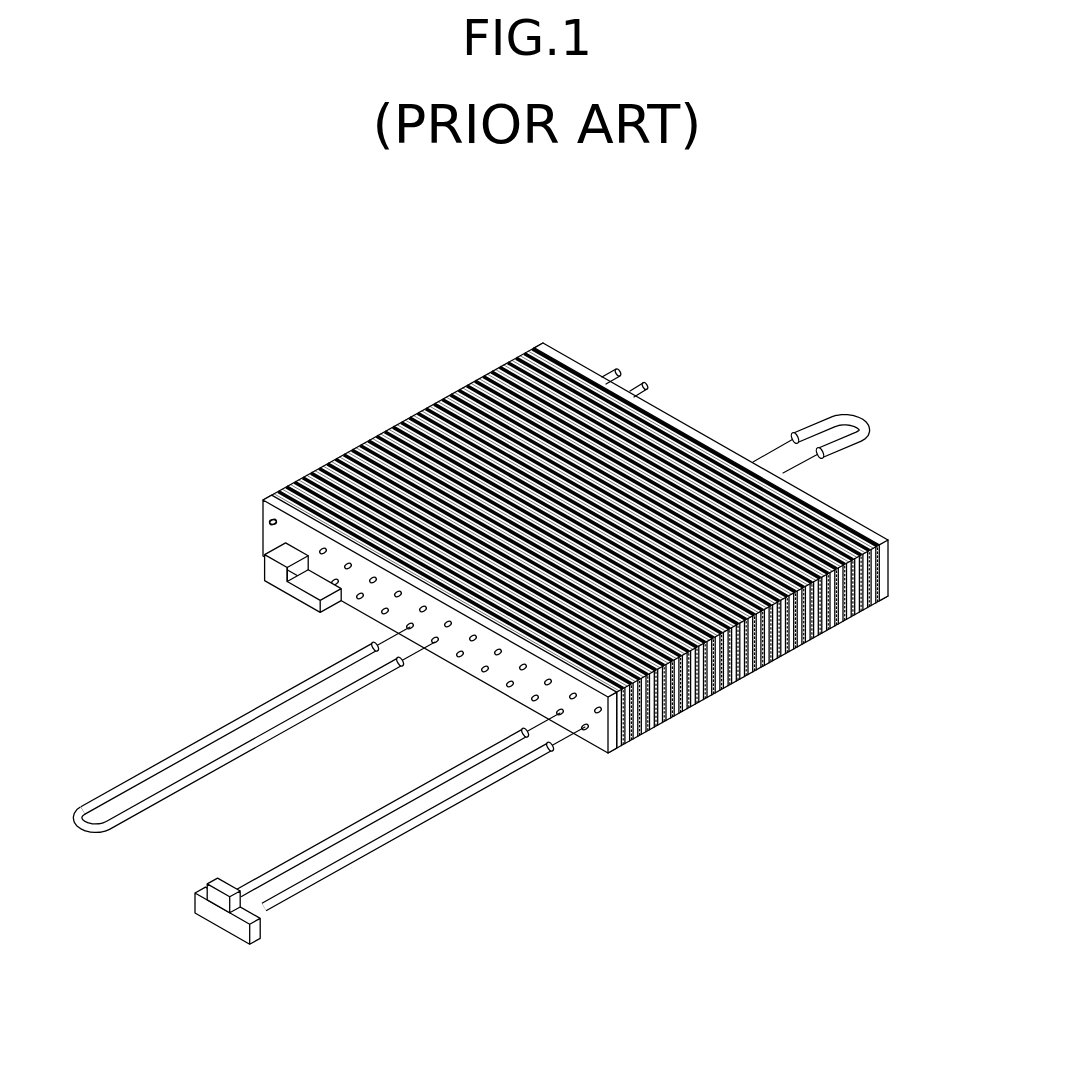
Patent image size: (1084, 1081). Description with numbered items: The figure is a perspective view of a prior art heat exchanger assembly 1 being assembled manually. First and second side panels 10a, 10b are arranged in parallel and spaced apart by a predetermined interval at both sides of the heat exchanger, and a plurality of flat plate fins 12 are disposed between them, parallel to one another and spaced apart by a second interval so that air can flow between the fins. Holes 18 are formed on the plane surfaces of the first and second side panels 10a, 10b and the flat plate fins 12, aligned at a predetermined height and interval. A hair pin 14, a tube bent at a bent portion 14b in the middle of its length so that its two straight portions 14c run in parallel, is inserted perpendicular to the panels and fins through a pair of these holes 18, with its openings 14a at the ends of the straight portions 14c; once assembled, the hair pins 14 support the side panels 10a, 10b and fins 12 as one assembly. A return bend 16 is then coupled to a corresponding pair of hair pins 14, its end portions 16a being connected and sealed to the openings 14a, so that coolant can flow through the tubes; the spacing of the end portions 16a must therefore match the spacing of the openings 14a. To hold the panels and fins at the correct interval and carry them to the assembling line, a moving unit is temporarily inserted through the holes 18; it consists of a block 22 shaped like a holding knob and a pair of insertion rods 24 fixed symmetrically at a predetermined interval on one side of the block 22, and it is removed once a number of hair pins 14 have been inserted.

The heat sink assembly 1 is at (394, 390).
The first side panel 10a is at (353, 580).
The second side panel 10b is at (872, 525).
The flat plate fins 12 is at (768, 663).
The hair pin 14 is at (158, 767).
The opening 14a is at (333, 643).
The bent portion 14b is at (112, 826).
The straight portion 14c is at (217, 732).
The return bend 16 is at (855, 416).
The end portion of return bend 16a is at (797, 433).
The holes 18 is at (507, 686).
The block 22 is at (195, 905).
The insertion rods 24 is at (401, 826).